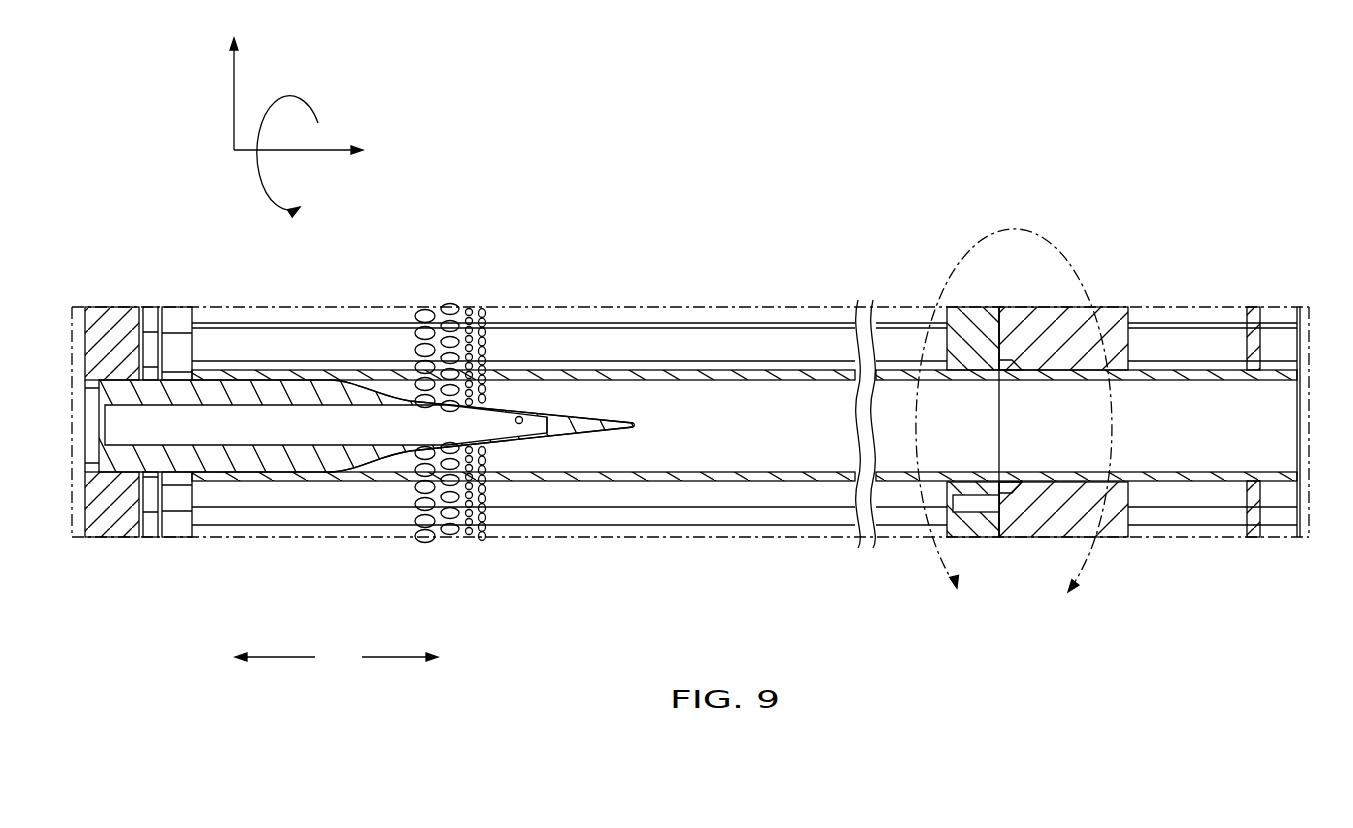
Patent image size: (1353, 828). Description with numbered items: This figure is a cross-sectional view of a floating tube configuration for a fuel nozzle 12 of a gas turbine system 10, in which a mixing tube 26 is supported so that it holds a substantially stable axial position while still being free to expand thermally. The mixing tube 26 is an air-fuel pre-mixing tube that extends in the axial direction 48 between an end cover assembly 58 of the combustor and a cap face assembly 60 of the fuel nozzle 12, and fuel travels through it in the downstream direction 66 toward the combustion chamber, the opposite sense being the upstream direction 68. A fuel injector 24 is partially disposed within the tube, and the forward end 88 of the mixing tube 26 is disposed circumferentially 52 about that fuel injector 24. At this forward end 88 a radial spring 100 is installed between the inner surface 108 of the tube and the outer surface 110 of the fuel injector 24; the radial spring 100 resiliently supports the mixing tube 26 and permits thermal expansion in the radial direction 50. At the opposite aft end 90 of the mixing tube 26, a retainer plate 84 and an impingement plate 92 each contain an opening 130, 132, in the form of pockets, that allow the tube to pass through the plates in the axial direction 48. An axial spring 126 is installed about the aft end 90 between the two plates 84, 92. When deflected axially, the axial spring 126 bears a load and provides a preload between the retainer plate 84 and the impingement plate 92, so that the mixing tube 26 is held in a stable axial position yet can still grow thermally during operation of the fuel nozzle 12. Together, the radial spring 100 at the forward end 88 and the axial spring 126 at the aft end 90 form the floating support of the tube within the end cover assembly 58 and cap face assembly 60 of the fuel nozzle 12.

The gas turbine system 10 is at (1014, 426).
The fuel nozzle 12 is at (1080, 184).
The fuel injector 24 is at (377, 425).
The mixing tube 26 is at (541, 312).
The axial direction 48 is at (292, 153).
The radial direction 50 is at (235, 100).
The circumferential direction 52 is at (257, 175).
The end cover assembly 58 is at (128, 315).
The cap face assembly 60 is at (1210, 306).
The downstream direction 66 is at (392, 657).
The upstream direction 68 is at (280, 657).
The retainer plate 84 is at (979, 421).
The forward end 88 is at (312, 292).
The aft end 90 is at (1214, 446).
The impingement plate 92 is at (1105, 310).
The radial spring 100 is at (187, 348).
The inner surface 108 is at (608, 390).
The outer surface 110 is at (340, 390).
The axial spring 126 is at (1003, 360).
The opening 130 is at (978, 483).
The opening 132 is at (1167, 482).